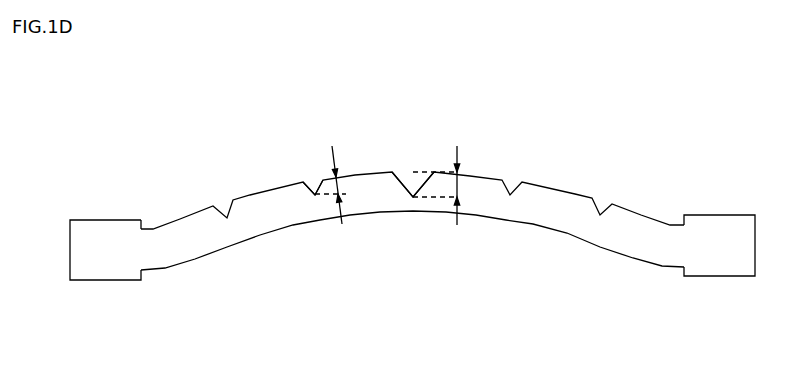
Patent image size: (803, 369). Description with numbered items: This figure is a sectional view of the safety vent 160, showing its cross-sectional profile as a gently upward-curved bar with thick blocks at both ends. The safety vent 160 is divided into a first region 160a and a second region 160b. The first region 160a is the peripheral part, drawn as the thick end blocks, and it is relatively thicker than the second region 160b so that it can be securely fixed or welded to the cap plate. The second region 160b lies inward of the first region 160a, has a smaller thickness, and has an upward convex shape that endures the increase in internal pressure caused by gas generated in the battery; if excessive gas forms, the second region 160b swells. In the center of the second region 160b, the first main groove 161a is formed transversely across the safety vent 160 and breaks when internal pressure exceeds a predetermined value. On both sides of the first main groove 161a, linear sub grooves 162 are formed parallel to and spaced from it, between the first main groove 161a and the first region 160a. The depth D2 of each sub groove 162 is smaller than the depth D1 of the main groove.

The safety vent 160 is at (78, 119).
The first region 160a is at (100, 272).
The second region 160b is at (373, 211).
The first main groove 161a is at (407, 189).
The sub groove 162 is at (316, 188).
The depth of the main groove D1 is at (480, 146).
The depth of the sub groove D2 is at (353, 146).